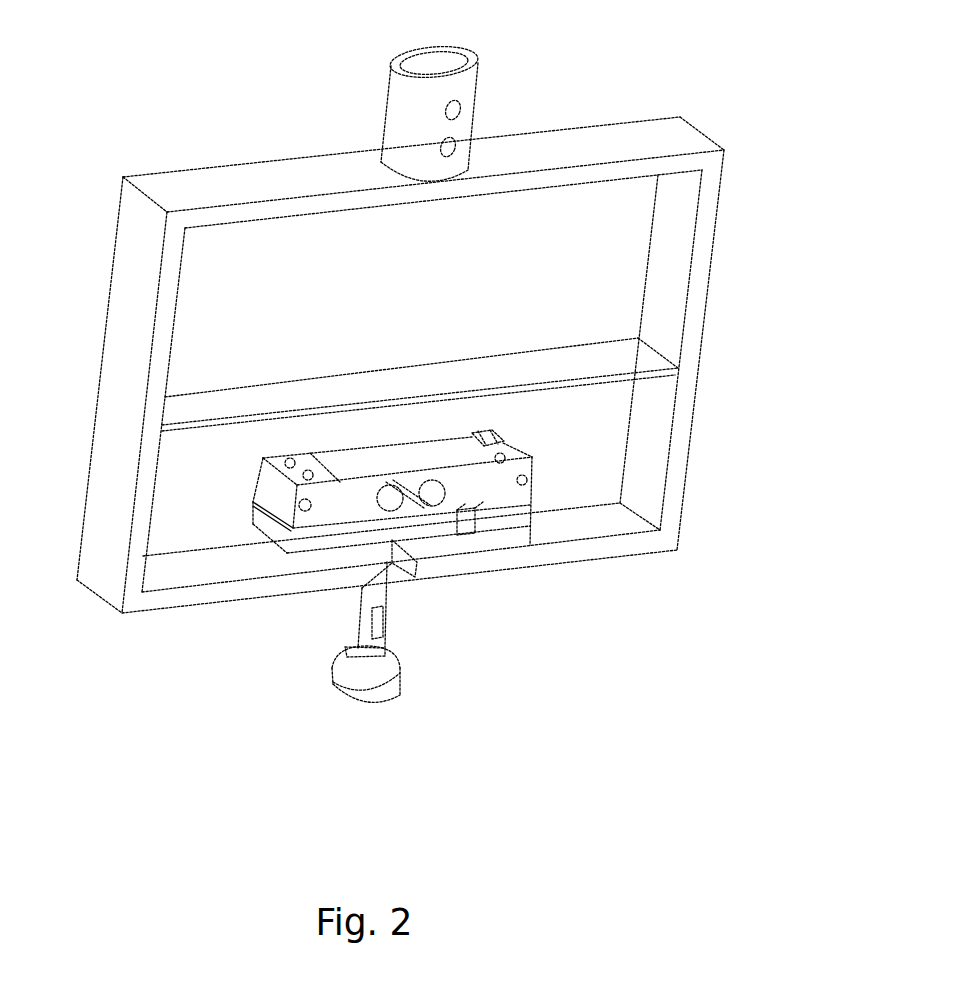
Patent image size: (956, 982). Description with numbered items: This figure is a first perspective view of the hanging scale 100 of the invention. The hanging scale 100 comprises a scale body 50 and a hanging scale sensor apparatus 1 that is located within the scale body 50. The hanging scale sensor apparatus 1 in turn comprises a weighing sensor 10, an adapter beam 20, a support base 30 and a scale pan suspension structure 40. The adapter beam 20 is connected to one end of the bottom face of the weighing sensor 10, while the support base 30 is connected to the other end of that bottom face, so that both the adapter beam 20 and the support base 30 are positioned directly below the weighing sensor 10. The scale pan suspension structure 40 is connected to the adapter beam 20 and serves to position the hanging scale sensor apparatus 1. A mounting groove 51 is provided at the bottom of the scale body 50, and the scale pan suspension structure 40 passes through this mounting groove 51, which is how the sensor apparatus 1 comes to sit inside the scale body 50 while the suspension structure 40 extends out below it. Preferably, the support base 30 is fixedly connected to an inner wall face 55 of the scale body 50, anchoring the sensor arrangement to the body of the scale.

The hanging scale 100 is at (574, 91).
The scale body 50 is at (678, 272).
The inner wall face 55 is at (600, 515).
The hanging scale sensor apparatus 1 is at (250, 548).
The weighing sensor 10 is at (495, 490).
The adapter beam 20 is at (425, 523).
The support base 30 is at (497, 532).
The mounting groove 51 is at (414, 581).
The scale pan suspension structure 40 is at (370, 593).